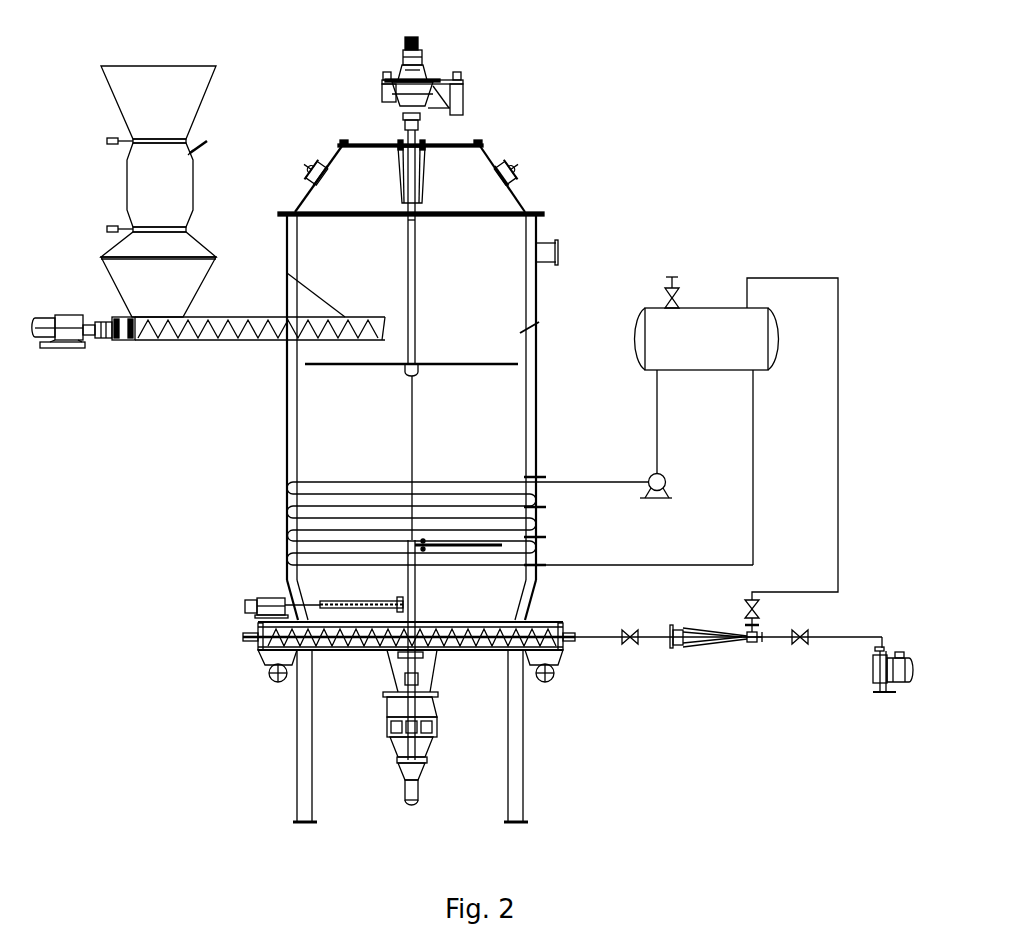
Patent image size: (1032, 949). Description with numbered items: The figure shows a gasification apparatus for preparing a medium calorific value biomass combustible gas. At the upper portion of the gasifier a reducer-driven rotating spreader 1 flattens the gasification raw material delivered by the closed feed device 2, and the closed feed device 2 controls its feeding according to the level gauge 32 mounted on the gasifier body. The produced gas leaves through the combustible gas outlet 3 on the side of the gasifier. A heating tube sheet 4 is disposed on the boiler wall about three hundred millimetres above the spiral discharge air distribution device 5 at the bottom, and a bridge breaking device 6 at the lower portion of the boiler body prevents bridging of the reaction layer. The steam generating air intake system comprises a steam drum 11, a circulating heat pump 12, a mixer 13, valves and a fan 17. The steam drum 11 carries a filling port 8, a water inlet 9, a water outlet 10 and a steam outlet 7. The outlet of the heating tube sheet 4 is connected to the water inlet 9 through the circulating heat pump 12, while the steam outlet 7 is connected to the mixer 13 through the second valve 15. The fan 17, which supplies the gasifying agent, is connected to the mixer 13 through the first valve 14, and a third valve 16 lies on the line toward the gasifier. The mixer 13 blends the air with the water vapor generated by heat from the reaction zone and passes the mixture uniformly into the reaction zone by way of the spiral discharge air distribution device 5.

The reducer-driven rotating spreader 1 is at (328, 364).
The closed feed device 2 is at (179, 182).
The combustible gas outlet 3 is at (546, 255).
The level gauge 32 is at (539, 322).
The heating tube sheet 4 is at (323, 493).
The spiral discharge air distribution device 5 is at (460, 645).
The bridge breaking device 6 is at (348, 602).
The steam outlet 7 is at (748, 308).
The filling port 8 is at (667, 307).
The water inlet 9 is at (655, 372).
The water outlet 10 is at (753, 372).
The steam drum 11 is at (727, 327).
The circulating heat pump 12 is at (662, 478).
The mixer 13 is at (685, 641).
The first valve 14 is at (800, 645).
The second valve 15 is at (747, 603).
The third valve 16 is at (623, 644).
The fan 17 is at (880, 690).